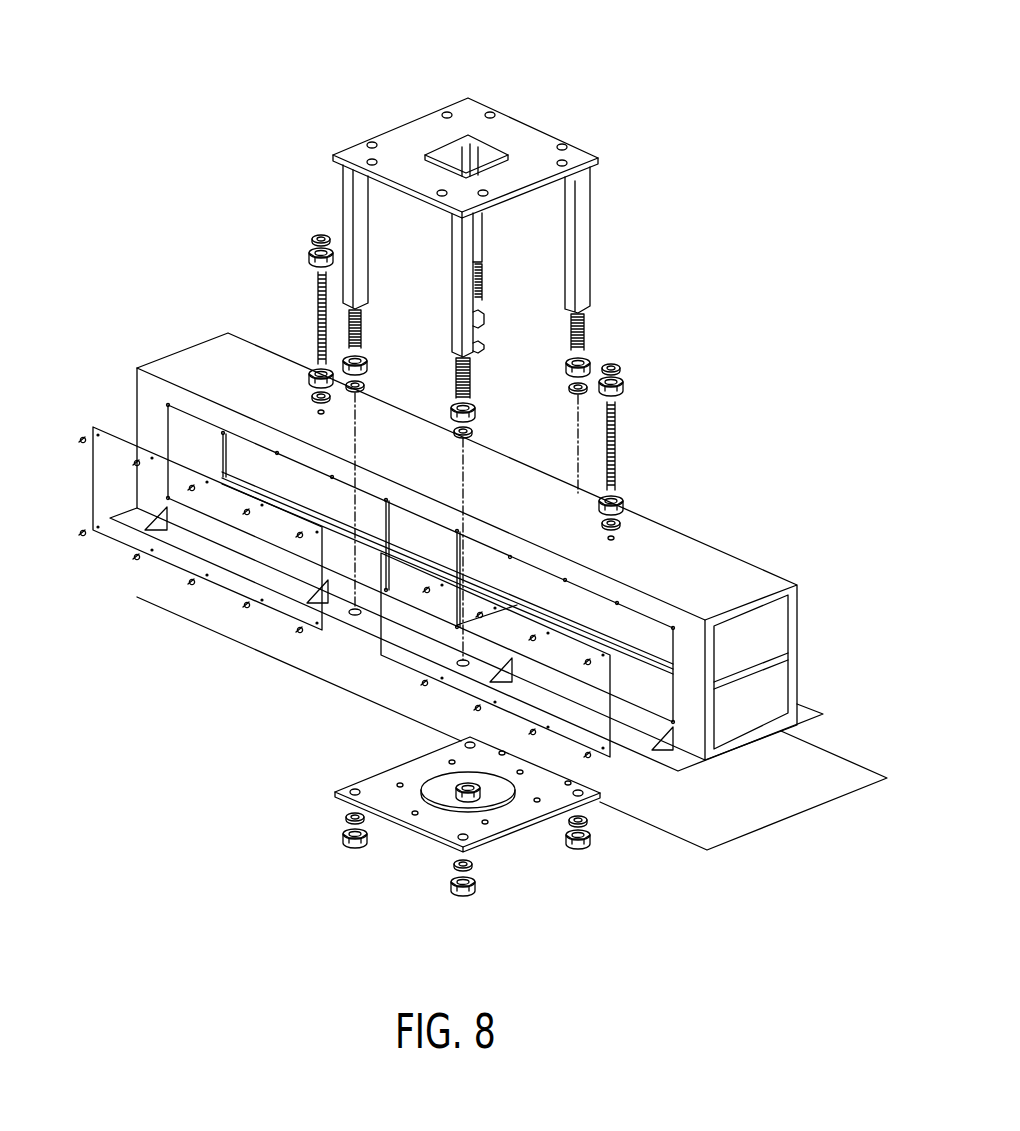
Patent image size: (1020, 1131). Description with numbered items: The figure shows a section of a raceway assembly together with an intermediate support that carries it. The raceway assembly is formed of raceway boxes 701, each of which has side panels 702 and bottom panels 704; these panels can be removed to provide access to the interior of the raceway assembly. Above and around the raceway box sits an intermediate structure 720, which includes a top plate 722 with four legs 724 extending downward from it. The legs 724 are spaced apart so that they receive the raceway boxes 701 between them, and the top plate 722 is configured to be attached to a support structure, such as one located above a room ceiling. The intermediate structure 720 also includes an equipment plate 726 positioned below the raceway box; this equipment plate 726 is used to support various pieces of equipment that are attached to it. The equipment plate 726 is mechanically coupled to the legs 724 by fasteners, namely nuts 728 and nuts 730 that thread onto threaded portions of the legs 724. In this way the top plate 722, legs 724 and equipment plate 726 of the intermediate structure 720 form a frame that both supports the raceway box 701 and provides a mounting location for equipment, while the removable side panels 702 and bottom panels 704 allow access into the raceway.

The raceway box 701 is at (746, 548).
The side panel 702 is at (124, 546).
The bottom panel 704 is at (784, 820).
The intermediate structure 720 is at (501, 207).
The top plate 722 is at (417, 128).
The leg 724 is at (590, 238).
The equipment plate 726 is at (510, 838).
The nut 728 is at (353, 847).
The nut 730 is at (366, 364).